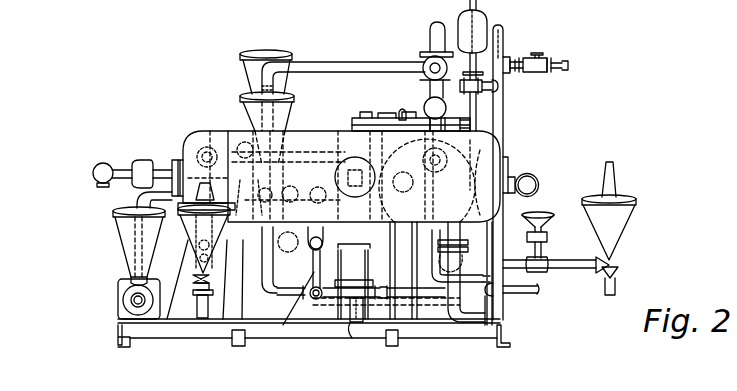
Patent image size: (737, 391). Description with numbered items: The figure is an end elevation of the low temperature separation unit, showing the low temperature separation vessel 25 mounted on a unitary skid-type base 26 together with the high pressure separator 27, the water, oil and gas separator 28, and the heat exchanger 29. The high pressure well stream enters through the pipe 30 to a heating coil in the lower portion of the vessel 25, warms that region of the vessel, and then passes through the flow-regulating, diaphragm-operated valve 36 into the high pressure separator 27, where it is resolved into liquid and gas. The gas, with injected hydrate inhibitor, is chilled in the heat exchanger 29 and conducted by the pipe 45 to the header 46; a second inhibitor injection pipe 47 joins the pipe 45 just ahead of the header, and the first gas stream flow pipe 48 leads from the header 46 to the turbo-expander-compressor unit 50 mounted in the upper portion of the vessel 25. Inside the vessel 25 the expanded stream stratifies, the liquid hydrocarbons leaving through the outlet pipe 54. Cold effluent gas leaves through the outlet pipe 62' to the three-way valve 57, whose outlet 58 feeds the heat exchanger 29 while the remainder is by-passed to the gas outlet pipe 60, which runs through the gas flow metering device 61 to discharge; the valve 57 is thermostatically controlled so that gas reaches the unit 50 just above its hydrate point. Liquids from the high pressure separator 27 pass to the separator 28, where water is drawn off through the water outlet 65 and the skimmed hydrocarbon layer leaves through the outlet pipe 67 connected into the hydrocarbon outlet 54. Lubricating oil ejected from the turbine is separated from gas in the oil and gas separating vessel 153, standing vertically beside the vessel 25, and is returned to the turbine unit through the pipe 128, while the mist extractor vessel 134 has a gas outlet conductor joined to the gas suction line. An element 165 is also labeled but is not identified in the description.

The low temperature separation vessel 25 is at (540, 129).
The unitary skid-type base 26 is at (118, 333).
The high pressure separator 27 is at (186, 240).
The water, oil and gas separator 28 is at (227, 131).
The heat exchanger 29 is at (295, 292).
The pipe 30 is at (528, 290).
The flow-regulating, diaphragm-operated valve 36 is at (282, 52).
The pipe 45 is at (503, 108).
The header 46 is at (500, 80).
The second inhibitor injection pipe 47 is at (558, 58).
The first gas stream flow pipe 48 is at (446, 90).
The turbo-expander-compressor unit 50 is at (412, 104).
The outlet pipe 54 is at (575, 268).
The three-way valve 57 is at (285, 96).
The outlet 58 is at (267, 270).
The gas outlet pipe 60 is at (135, 205).
The gas flow metering device 61 is at (123, 290).
The pipe 62' is at (343, 78).
The water outlet 65 is at (197, 303).
The outlet pipe 67 is at (445, 230).
The pipe 128 is at (366, 346).
The mist extractor vessel 134 is at (487, 26).
The oil and gas separating vessel 153 is at (386, 266).
The manifold 165 is at (372, 118).